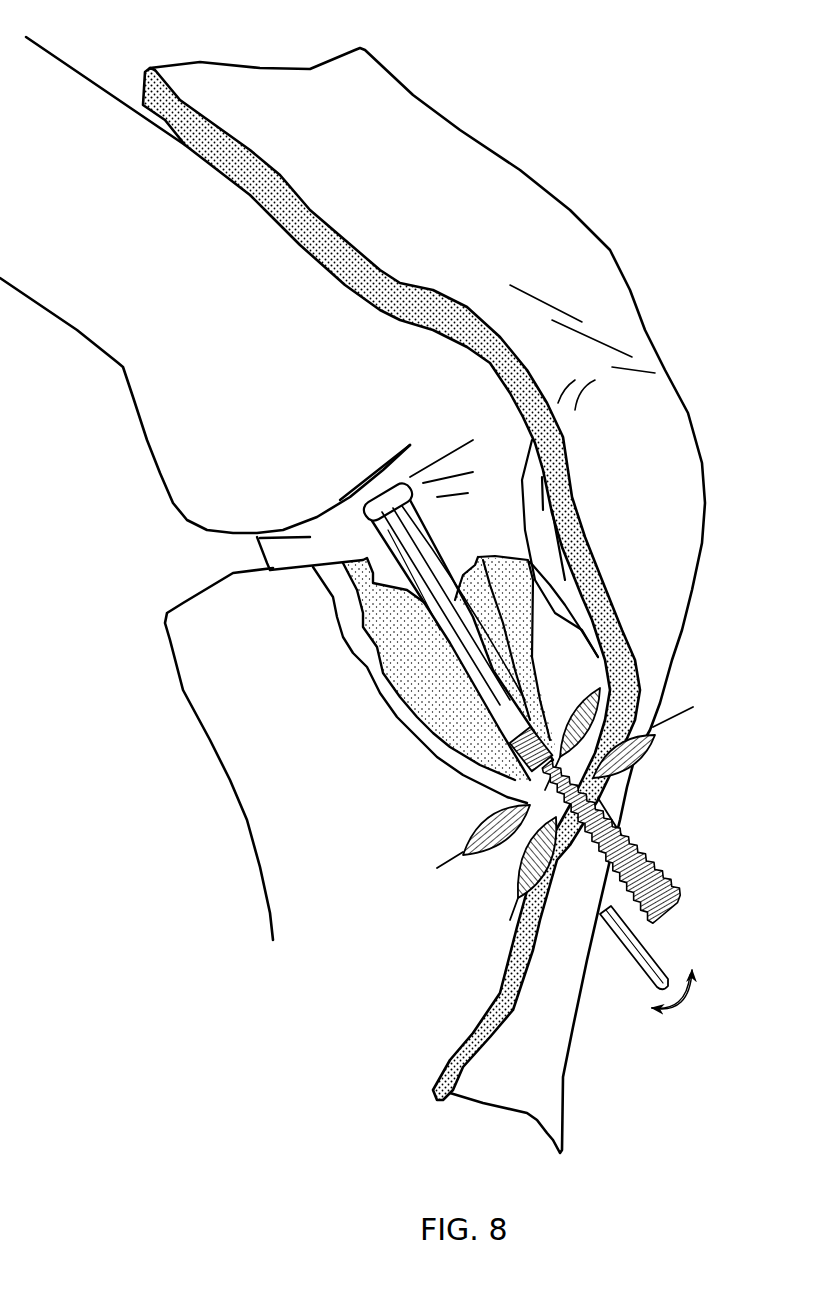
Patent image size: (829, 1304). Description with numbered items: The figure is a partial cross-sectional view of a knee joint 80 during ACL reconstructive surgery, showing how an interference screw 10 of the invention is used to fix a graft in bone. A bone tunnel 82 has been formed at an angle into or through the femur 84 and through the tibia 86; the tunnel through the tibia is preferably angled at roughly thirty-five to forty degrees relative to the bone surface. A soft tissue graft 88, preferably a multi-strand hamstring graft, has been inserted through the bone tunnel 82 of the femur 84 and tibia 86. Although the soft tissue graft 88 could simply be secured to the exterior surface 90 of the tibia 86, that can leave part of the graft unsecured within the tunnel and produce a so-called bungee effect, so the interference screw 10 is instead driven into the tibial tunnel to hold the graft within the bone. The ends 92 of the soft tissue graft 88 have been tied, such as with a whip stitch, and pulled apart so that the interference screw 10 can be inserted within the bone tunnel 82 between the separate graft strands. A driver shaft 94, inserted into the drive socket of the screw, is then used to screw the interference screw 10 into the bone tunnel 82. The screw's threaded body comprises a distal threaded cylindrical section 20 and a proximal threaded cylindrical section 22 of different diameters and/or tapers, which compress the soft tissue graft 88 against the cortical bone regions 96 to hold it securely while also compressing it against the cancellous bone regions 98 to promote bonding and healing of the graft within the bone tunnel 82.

The interference screw 10 is at (610, 920).
The distal threaded cylindrical section 20 is at (563, 776).
The proximal threaded cylindrical section 22 is at (644, 886).
The knee joint 80 is at (172, 563).
The bone tunnel 82 is at (350, 528).
The femur 84 is at (90, 115).
The tibia 86 is at (287, 822).
The soft tissue graft 88 is at (427, 557).
The exterior surface 90 is at (347, 910).
The ends 92 is at (598, 680).
The shaft 94 is at (663, 960).
The cortical bone regions 96 is at (340, 610).
The cancellous bone regions 98 is at (407, 658).